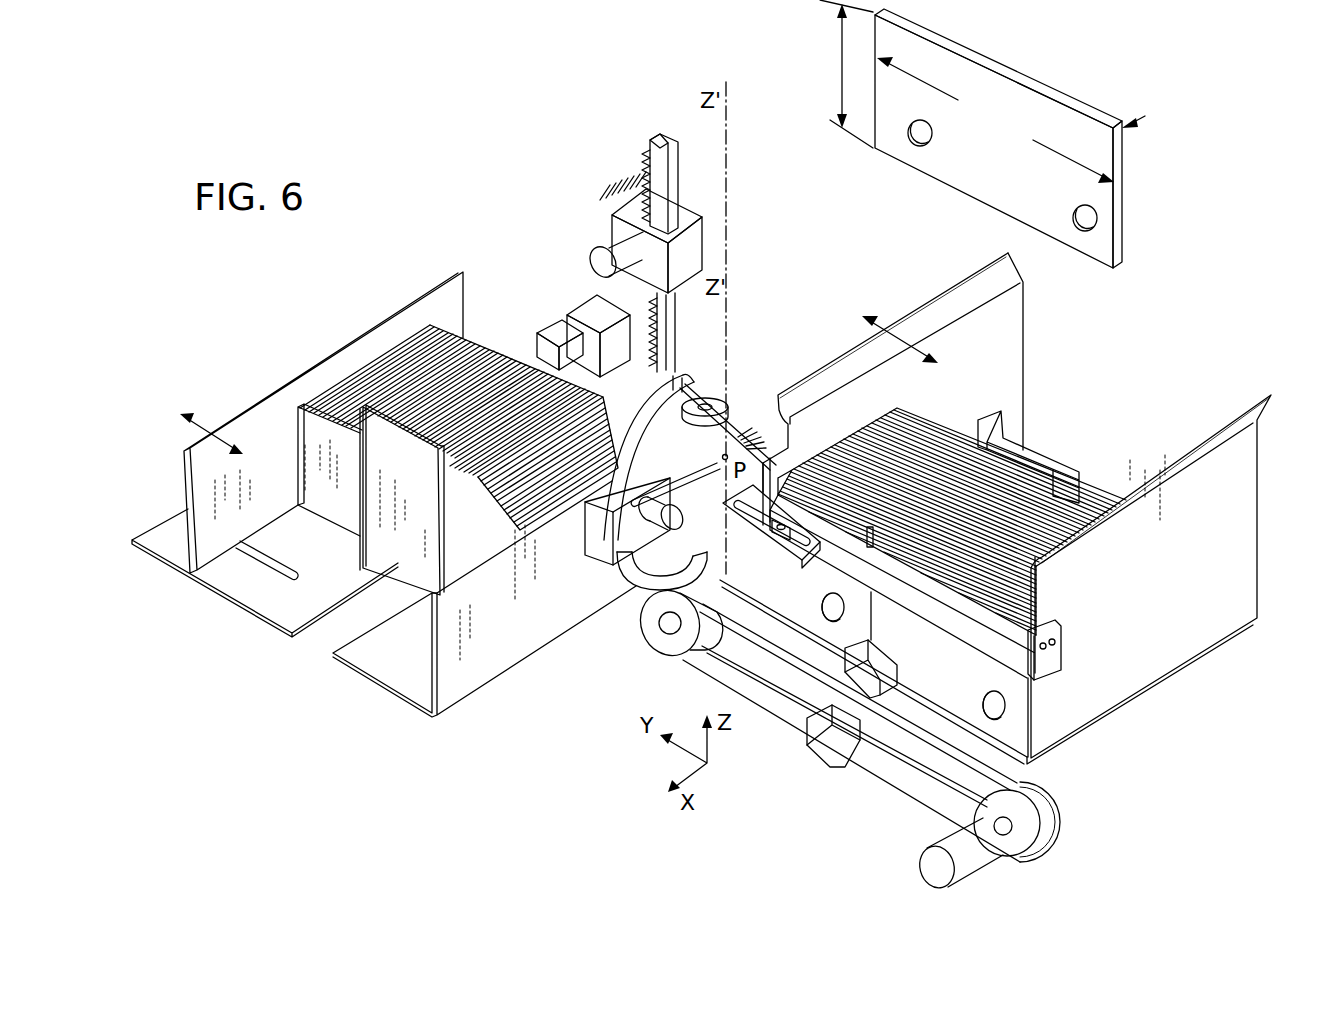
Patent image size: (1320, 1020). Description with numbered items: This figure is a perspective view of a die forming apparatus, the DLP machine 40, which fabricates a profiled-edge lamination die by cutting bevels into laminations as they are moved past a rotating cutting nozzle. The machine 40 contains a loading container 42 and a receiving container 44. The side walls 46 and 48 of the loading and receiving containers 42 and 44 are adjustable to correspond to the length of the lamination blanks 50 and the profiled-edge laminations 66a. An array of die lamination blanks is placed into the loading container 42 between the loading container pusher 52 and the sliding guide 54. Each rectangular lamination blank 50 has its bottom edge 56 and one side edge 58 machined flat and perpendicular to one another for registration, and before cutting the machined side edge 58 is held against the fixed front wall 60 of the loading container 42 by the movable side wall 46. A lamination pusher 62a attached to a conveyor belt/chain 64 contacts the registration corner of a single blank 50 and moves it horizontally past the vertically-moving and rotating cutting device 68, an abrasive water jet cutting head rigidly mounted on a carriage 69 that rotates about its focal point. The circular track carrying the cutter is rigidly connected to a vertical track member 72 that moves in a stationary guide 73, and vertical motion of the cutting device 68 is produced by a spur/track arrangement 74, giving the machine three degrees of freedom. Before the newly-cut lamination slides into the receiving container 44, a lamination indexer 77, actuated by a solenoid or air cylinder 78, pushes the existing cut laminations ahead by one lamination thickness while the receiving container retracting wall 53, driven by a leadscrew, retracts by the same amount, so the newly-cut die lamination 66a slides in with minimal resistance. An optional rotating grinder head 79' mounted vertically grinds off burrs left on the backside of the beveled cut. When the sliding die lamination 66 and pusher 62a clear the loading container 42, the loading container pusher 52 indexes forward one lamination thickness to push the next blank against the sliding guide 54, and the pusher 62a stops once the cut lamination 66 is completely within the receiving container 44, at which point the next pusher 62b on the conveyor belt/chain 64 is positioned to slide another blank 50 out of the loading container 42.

The DLP machine 40 is at (782, 316).
The loading container 42 is at (1143, 683).
The receiving container 44 is at (427, 718).
The side wall 46 is at (1008, 366).
The side wall 48 is at (275, 451).
The lamination blank 50 is at (972, 70).
The loading container pusher 52 is at (1035, 459).
The receiving container retracting wall 53 is at (413, 506).
The sliding guide 54 is at (945, 630).
The bottom edge 56 is at (927, 175).
The side edge 58 is at (1124, 170).
The fixed front wall 60 is at (1228, 497).
The lamination pusher 62a is at (898, 669).
The lamination pusher 62b is at (823, 768).
The conveyor belt/chain 64 is at (1048, 796).
The sliding die lamination 66 is at (820, 598).
The profiled-edge lamination 66a is at (445, 345).
The cutting device 68 is at (675, 515).
The carriage 69 is at (585, 540).
The vertical track member 72 is at (680, 318).
The stationary guide 73 is at (683, 208).
The spur/track arrangement 74 is at (590, 262).
The lamination indexer 77 is at (545, 332).
The solenoid or air cylinder 78 is at (585, 312).
The rotating grinder head 79' is at (724, 399).